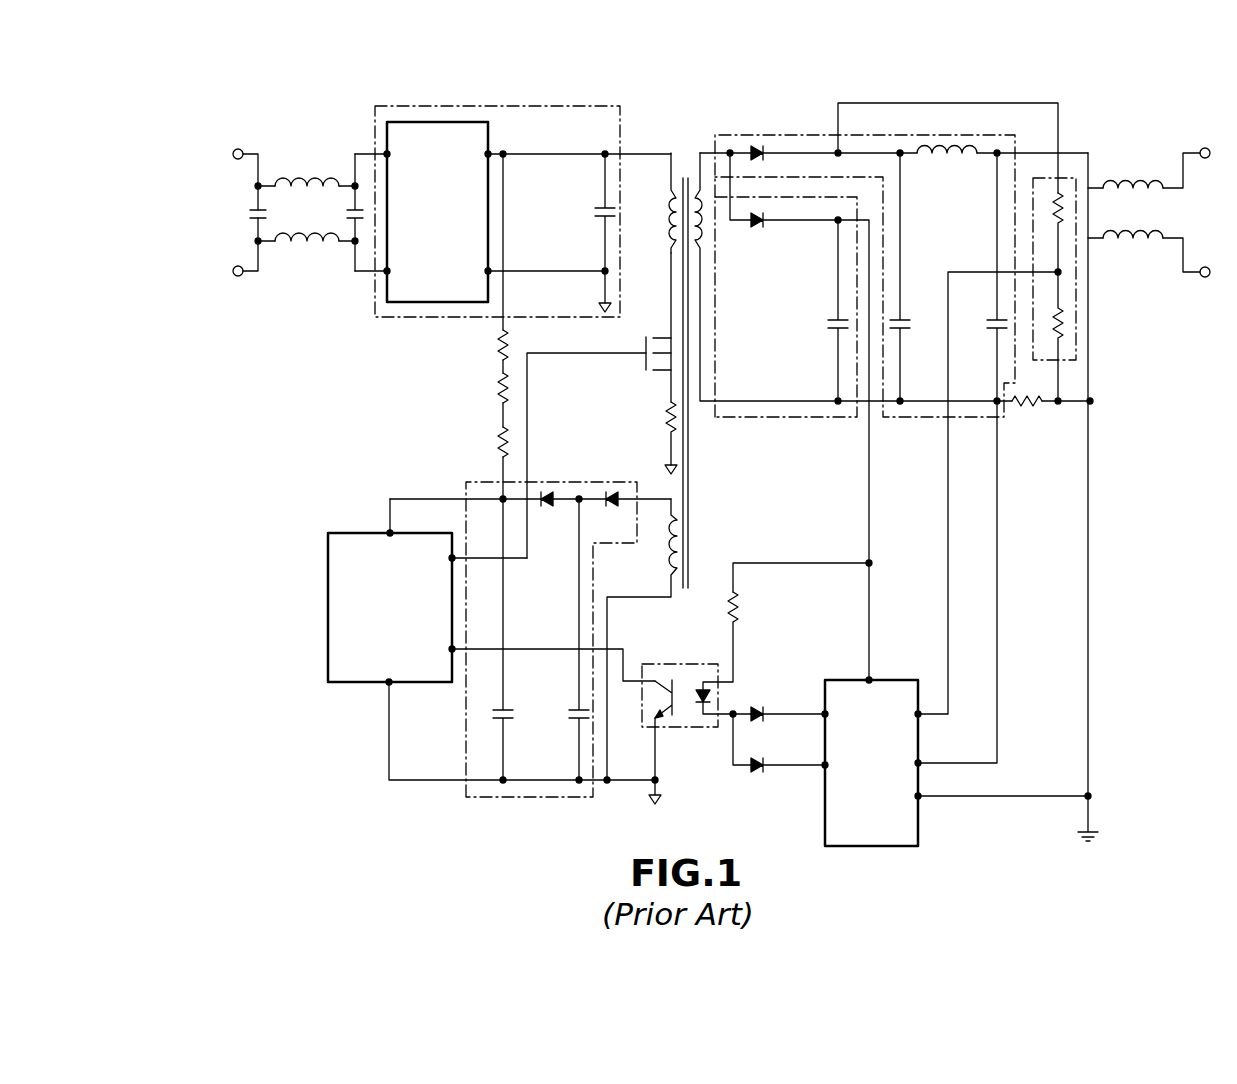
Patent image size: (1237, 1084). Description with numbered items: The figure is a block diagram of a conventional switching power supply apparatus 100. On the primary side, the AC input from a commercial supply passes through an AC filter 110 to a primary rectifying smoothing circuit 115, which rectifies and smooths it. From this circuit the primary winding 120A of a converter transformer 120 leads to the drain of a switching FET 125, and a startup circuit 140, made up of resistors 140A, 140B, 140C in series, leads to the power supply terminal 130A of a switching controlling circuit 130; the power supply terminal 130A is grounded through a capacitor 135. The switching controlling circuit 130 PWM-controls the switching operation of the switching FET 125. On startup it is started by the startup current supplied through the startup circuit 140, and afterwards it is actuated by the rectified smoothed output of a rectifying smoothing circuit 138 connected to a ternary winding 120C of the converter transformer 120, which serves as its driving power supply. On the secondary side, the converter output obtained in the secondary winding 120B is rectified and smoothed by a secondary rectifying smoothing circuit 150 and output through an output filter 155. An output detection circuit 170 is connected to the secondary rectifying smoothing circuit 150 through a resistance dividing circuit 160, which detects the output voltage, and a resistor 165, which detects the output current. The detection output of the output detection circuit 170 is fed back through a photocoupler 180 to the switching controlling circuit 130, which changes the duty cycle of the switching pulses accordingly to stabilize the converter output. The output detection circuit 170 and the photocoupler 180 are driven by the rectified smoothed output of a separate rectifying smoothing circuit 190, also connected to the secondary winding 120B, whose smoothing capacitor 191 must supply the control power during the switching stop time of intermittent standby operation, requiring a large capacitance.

The switching power supply apparatus 100 is at (345, 769).
The AC filter 110 is at (303, 248).
The primary rectifying smoothing circuit 115 is at (372, 132).
The converter transformer 120 is at (848, 433).
The primary winding 120A is at (668, 207).
The secondary winding 120B is at (700, 205).
The ternary winding 120C is at (674, 540).
The switching FET 125 is at (643, 366).
The switching controlling circuit 130 is at (328, 605).
The power supply terminal 130A is at (388, 531).
The capacitor 135 is at (510, 712).
The rectifying smoothing circuit 138 is at (588, 481).
The startup circuit 140 is at (431, 326).
The resistor 140A is at (497, 350).
The resistor 140B is at (497, 394).
The resistor 140C is at (462, 442).
The secondary rectifying smoothing circuit 150 is at (922, 418).
The output filter 155 is at (1140, 182).
The resistance dividing circuit 160 is at (1077, 330).
The resistor 165 is at (1030, 408).
The output detection circuit 170 is at (825, 825).
The photocoupler 180 is at (686, 663).
The rectifying smoothing circuit 190 is at (792, 416).
The smoothing capacitor 191 is at (836, 329).